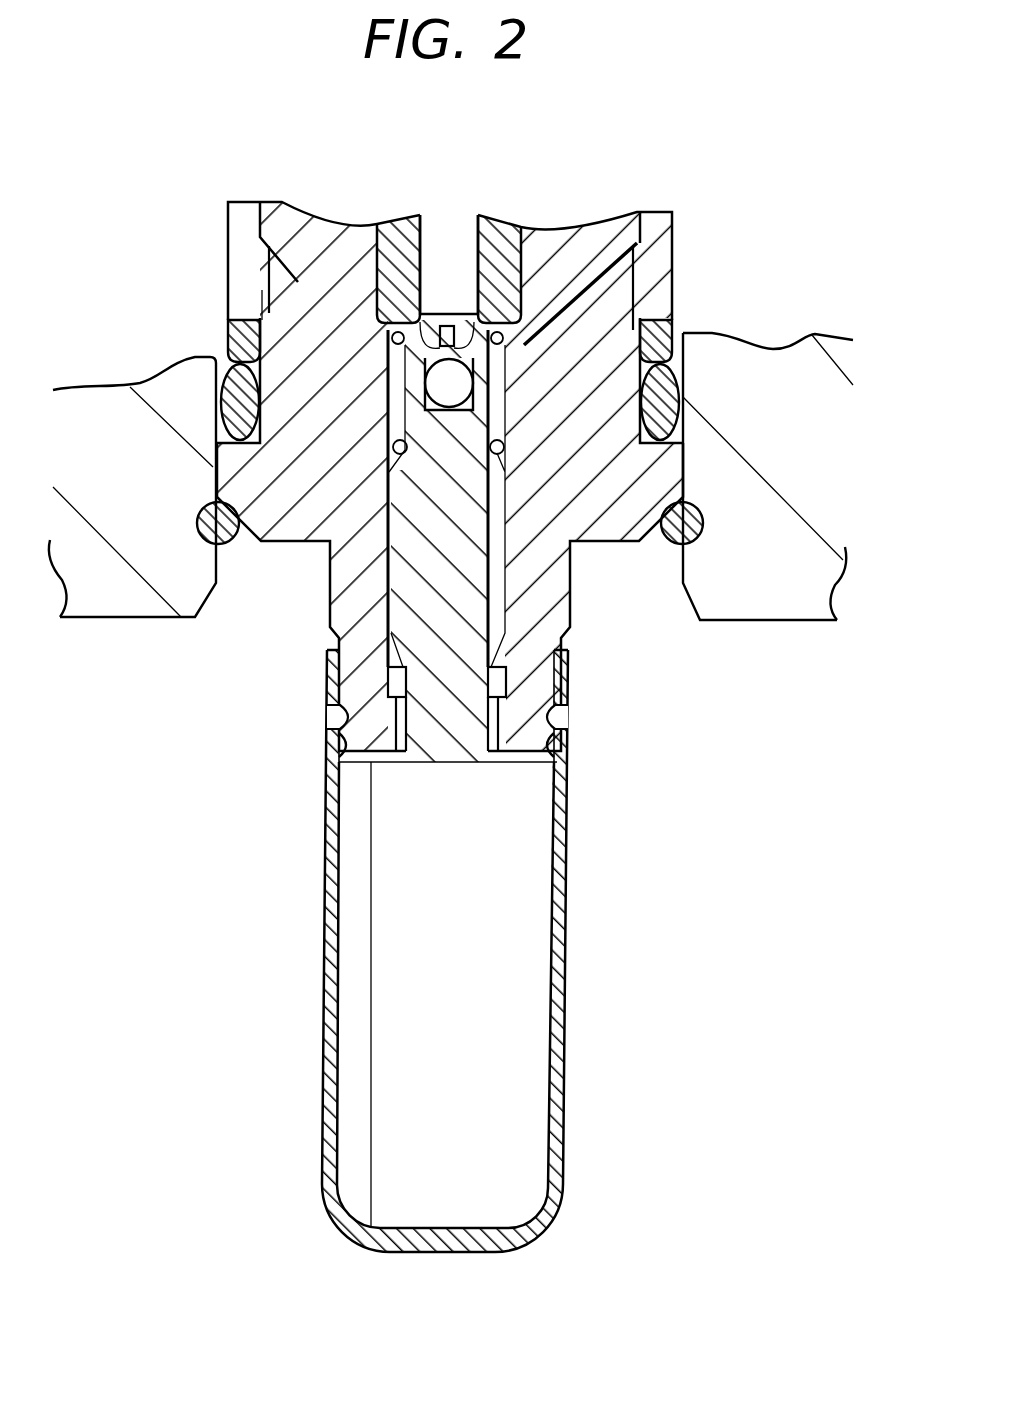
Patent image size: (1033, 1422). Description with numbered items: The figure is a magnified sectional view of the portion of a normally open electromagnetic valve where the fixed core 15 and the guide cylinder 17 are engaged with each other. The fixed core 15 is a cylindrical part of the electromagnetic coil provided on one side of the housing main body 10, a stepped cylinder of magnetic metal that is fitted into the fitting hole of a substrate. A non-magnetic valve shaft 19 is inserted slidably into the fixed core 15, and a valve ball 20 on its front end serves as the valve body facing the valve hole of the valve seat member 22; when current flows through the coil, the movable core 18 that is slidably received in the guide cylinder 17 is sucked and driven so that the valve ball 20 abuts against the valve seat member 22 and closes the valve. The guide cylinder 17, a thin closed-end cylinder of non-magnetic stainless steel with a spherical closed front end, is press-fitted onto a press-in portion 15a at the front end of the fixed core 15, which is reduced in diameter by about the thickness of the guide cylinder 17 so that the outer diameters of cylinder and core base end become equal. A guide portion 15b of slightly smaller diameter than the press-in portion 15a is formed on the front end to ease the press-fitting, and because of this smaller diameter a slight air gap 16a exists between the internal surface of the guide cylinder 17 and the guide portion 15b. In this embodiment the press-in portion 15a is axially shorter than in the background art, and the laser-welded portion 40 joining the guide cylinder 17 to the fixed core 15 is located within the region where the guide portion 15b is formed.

The housing main body 10 is at (296, 302).
The valve seat member 22 is at (497, 287).
The valve ball 20 is at (443, 388).
The valve shaft 19 is at (455, 553).
The fixed core 15 is at (538, 620).
The press-in portion 15a is at (330, 672).
The guide portion 15b is at (345, 768).
The welded portion 40 is at (333, 717).
The air gap 16a is at (557, 762).
The guide cylinder 17 is at (560, 1090).
The movable core 18 is at (513, 990).